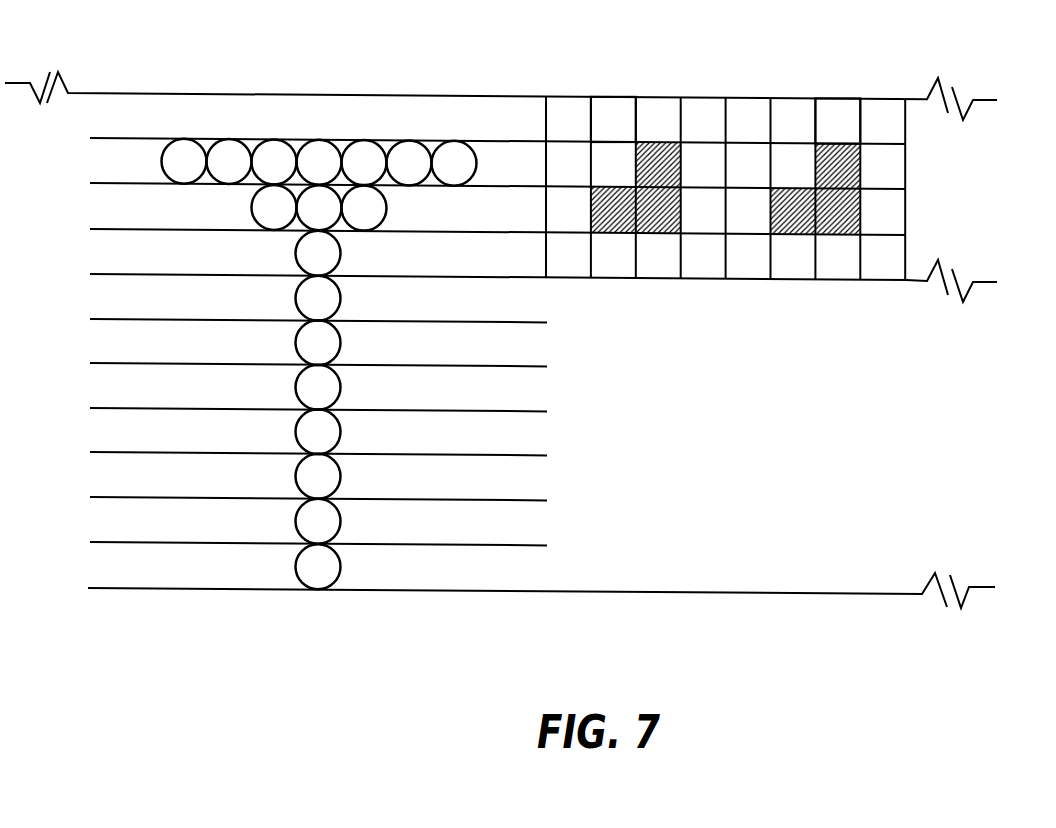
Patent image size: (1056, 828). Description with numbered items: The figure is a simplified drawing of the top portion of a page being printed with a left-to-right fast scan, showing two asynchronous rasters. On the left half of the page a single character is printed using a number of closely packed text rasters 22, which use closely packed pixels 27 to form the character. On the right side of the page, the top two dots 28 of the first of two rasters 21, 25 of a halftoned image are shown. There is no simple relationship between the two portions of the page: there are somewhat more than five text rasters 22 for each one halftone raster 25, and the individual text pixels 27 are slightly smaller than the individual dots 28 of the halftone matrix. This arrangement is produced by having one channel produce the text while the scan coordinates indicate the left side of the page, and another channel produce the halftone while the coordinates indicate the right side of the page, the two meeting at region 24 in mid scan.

The text raster 22 is at (208, 114).
The text pixel 27 is at (453, 150).
The halftone dot 28 is at (605, 107).
The first halftone raster 21 is at (817, 120).
The halftone raster 25 is at (962, 192).
The substrate region 24 is at (695, 478).